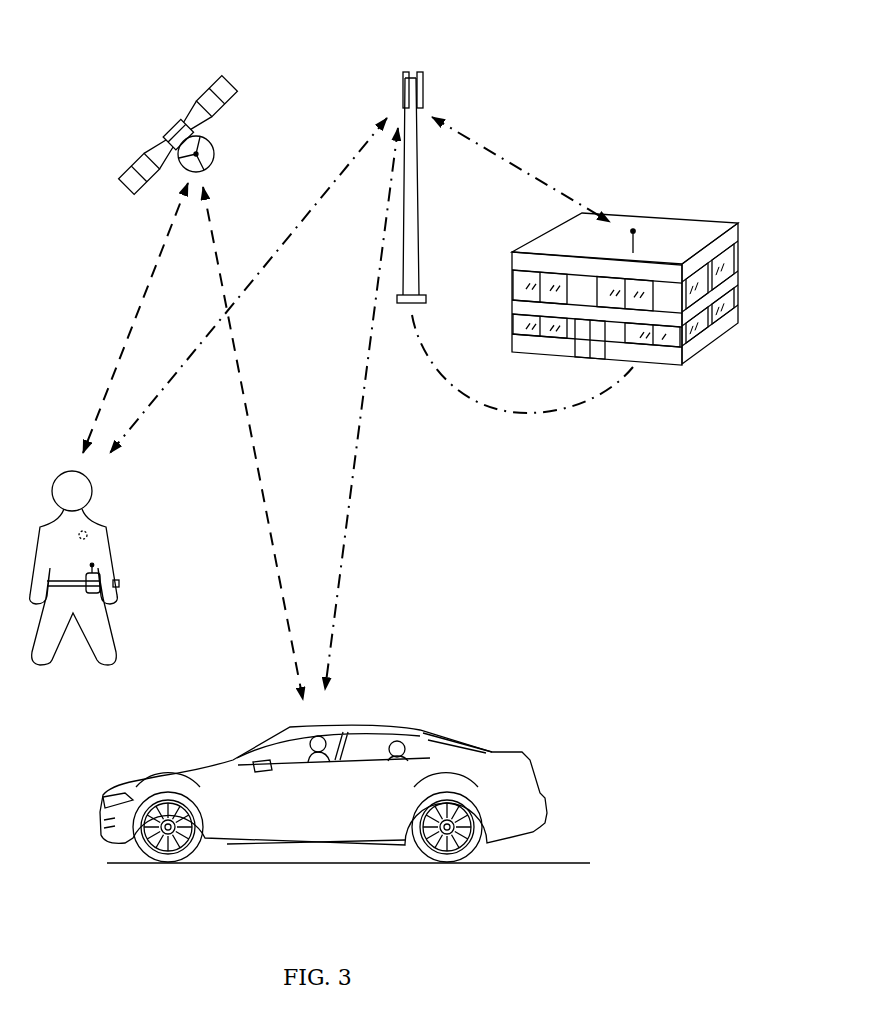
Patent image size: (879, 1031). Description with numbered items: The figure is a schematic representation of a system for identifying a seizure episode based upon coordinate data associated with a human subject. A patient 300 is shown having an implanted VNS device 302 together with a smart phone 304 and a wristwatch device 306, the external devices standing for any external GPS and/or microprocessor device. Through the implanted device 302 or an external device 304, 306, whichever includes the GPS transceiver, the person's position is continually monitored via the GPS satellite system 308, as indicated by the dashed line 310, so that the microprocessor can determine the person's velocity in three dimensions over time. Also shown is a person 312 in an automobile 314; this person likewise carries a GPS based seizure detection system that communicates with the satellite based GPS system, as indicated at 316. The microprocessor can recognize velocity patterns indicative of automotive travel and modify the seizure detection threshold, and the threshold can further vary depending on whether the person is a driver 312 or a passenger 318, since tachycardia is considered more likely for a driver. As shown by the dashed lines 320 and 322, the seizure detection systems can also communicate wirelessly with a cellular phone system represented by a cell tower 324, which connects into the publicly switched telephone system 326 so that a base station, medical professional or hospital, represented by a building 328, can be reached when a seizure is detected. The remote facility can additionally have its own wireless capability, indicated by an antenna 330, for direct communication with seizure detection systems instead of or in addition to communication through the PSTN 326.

The patient 300 is at (87, 496).
The implanted VNS device 302 is at (88, 535).
The smart phone 304 is at (99, 578).
The wristwatch device 306 is at (119, 584).
The GPS satellite system 308 is at (170, 128).
The dashed line 310 is at (145, 293).
The person (driver) 312 is at (327, 737).
The automobile 314 is at (472, 767).
The communication with satellite GPS system 316 is at (247, 400).
The passenger 318 is at (400, 741).
The dashed line 320 is at (273, 260).
The dashed line 322 is at (358, 433).
The cell tower 324 is at (423, 78).
The publicly switched telephone system (PSTN) 326 is at (545, 415).
The building 328 is at (665, 343).
The antenna 330 is at (637, 240).